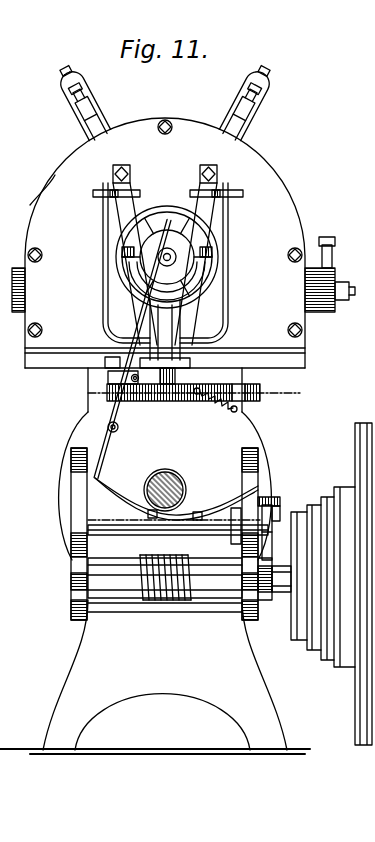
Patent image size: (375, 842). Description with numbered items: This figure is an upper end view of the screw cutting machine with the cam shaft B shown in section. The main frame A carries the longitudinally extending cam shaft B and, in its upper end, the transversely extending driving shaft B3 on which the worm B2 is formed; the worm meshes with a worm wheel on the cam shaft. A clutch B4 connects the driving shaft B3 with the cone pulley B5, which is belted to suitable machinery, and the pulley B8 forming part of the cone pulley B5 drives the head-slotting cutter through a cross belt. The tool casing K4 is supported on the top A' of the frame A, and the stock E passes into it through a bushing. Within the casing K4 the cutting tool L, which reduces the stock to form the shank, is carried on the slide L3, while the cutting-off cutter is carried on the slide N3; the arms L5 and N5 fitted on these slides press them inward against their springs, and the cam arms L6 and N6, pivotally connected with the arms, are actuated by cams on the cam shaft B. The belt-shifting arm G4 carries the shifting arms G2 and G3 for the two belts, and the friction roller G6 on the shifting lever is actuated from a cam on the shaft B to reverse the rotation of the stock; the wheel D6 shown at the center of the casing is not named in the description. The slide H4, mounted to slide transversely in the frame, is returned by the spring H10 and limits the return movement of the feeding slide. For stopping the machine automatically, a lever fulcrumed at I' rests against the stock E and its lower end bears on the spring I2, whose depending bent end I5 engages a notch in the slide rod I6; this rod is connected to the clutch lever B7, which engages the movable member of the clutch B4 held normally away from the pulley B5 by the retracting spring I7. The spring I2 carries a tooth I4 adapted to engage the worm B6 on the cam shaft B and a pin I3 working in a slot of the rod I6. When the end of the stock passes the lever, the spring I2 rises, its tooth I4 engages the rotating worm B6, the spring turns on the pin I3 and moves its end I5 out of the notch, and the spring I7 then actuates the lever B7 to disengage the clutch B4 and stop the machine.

The tool casing K4 is at (272, 188).
The slide N3 is at (82, 82).
The arm N5 is at (97, 118).
The slide L3 is at (262, 93).
The arm L5 is at (243, 130).
The shifting arm G2 is at (103, 200).
The shifting arm G3 is at (215, 195).
The cam arm N6 is at (115, 212).
The cam arm L6 is at (207, 212).
The shifting arm G4 is at (107, 310).
The cutting tool L is at (140, 316).
The friction roller G6 is at (193, 353).
The wheel D6 is at (155, 240).
The stock E is at (169, 263).
The fulcrum I' is at (132, 349).
The top A' is at (163, 366).
The slide H4 is at (260, 396).
The spring H10 is at (225, 404).
The frame A is at (155, 583).
The spring I2 is at (110, 487).
The worm B6 is at (170, 475).
The cam shaft B is at (182, 486).
The pin I3 is at (198, 516).
The tooth I4 is at (137, 528).
The slide rod I6 is at (110, 532).
The bent end I5 is at (233, 528).
The worm B2 is at (153, 600).
The driving shaft B3 is at (222, 598).
The clutch B4 is at (255, 605).
The retracting spring I7 is at (266, 503).
The clutch lever B7 is at (276, 517).
The cone pulley B5 is at (335, 495).
The pulley B8 is at (341, 584).